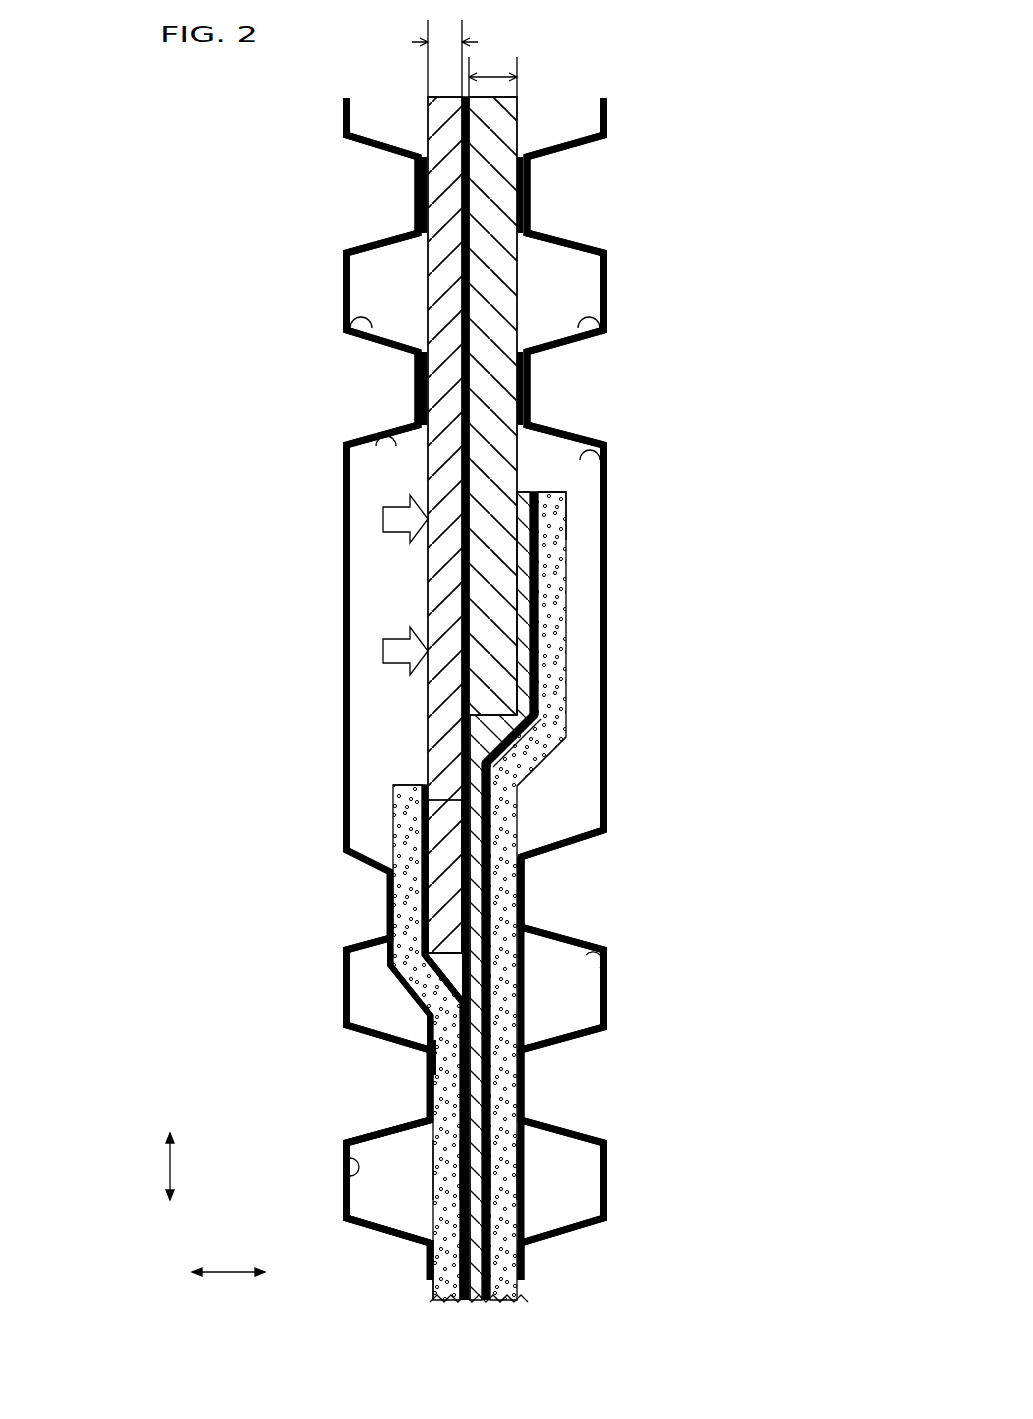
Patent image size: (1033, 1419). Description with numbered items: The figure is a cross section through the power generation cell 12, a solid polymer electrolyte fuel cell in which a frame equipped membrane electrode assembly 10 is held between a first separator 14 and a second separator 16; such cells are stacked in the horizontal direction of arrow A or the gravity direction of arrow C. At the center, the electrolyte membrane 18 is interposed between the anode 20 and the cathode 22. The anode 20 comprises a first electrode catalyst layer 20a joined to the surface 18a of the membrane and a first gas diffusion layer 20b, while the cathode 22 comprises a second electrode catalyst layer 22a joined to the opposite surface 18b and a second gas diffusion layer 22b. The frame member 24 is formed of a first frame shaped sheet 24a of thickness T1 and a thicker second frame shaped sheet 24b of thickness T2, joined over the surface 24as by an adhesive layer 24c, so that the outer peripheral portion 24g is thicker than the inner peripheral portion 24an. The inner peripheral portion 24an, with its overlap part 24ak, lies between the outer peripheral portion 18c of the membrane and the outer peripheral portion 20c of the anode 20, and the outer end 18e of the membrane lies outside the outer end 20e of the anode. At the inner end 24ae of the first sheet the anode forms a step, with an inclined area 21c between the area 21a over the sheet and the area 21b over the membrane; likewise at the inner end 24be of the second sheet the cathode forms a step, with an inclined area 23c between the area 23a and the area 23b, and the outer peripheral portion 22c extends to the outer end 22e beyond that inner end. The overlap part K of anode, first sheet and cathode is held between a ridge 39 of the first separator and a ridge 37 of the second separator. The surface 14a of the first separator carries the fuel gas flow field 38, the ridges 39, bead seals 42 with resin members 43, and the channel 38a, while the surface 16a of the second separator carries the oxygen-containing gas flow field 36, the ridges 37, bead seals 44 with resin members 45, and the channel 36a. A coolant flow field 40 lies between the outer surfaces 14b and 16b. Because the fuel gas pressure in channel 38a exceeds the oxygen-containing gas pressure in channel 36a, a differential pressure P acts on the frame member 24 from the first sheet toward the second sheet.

The frame equipped membrane electrode assembly 10 is at (374, 710).
The power generation cell 12 is at (248, 91).
The first separator 14 is at (335, 723).
The surface of the first separator 14a is at (343, 1176).
The surface of the first separator 14b is at (344, 515).
The second separator 16 is at (616, 714).
The surface of the second separator 16a is at (597, 958).
The surface of the second separator 16b is at (608, 638).
The electrolyte membrane 18 is at (521, 973).
The surface of the electrolyte membrane 18a is at (445, 980).
The surface of the electrolyte membrane 18b is at (492, 982).
The outer peripheral portion of the electrolyte membrane 18c is at (575, 840).
The outer end of the electrolyte membrane 18e is at (525, 491).
The anode 20 is at (283, 1040).
The first electrode catalyst layer 20a is at (430, 1057).
The first gas diffusion layer 20b is at (430, 1066).
The outer peripheral portion of the anode 20c is at (410, 808).
The outer end of the anode 20e is at (410, 785).
The area overlapped with the inner peripheral portion of the first frame shaped shee 21a is at (425, 828).
The area overlapped with the electrolyte membrane 21b is at (447, 1262).
The inclined area of the anode 21c is at (440, 975).
The cathode 22 is at (665, 1068).
The second electrode catalyst layer 22a is at (488, 1088).
The second gas diffusion layer 22b is at (488, 1109).
The outer peripheral portion of the cathode 22c is at (555, 513).
The outer end of the cathode 22e is at (553, 492).
The area overlapped with the inner peripheral portion of the second frame shaped she 23a is at (558, 541).
The area overlapped with the outer peripheral portion of the electrolyte membrane 23b is at (505, 1168).
The inclined area of the cathode 23c is at (548, 749).
The frame member 24 is at (529, 278).
The first frame shaped sheet 24a is at (437, 285).
The second frame shaped sheet 24b is at (492, 213).
The adhesive layer 24c is at (467, 626).
The outer peripheral portion of the frame member 24g is at (512, 124).
The surface of the first frame shaped sheet 24as is at (473, 664).
The inner end of the second frame shaped sheet 24be is at (558, 735).
The inner end of the first frame shaped sheet 24ae is at (432, 965).
The inner peripheral portion of the first frame shaped sheet 24an is at (446, 850).
The overlap part 24ak is at (445, 876).
The oxygen-containing gas flow field 36 is at (562, 1181).
The channel 36a is at (585, 584).
The ridge 37 is at (466, 1106).
The fuel gas flow field 38 is at (389, 1181).
The channel 38a is at (373, 569).
The ridge 39 is at (432, 1057).
The coolant flow field 40 is at (367, 886).
The bead seal 42 is at (372, 136).
The resin member 43 is at (421, 186).
The bead seal 44 is at (573, 135).
The resin member 45 is at (522, 186).
The overlap part K is at (520, 890).
The thickness of the first frame shaped sheet T1 is at (445, 57).
The thickness of the second frame shaped sheet T2 is at (493, 75).
The differential pressure P is at (405, 585).
The arrow C is at (179, 1166).
The arrow A is at (228, 1259).